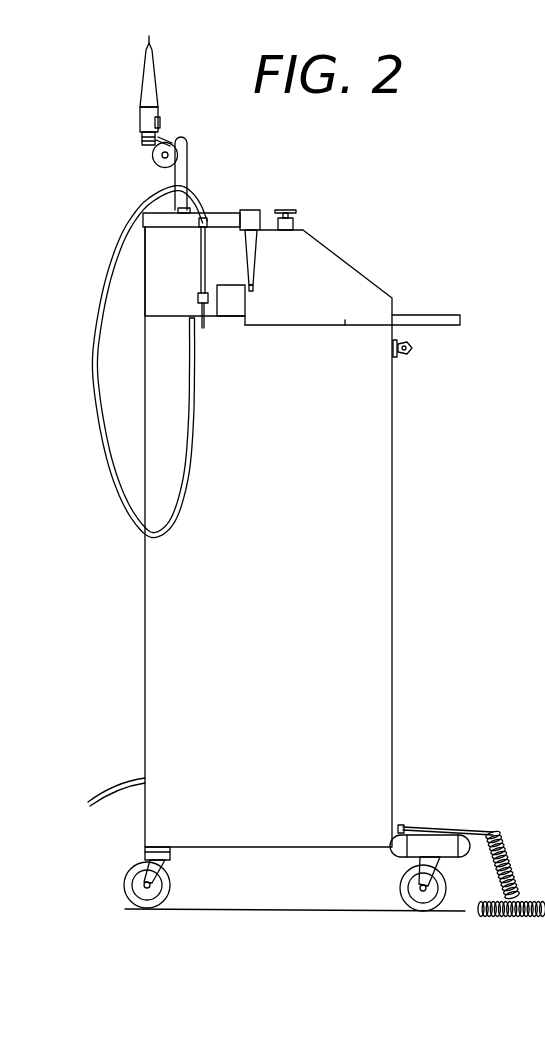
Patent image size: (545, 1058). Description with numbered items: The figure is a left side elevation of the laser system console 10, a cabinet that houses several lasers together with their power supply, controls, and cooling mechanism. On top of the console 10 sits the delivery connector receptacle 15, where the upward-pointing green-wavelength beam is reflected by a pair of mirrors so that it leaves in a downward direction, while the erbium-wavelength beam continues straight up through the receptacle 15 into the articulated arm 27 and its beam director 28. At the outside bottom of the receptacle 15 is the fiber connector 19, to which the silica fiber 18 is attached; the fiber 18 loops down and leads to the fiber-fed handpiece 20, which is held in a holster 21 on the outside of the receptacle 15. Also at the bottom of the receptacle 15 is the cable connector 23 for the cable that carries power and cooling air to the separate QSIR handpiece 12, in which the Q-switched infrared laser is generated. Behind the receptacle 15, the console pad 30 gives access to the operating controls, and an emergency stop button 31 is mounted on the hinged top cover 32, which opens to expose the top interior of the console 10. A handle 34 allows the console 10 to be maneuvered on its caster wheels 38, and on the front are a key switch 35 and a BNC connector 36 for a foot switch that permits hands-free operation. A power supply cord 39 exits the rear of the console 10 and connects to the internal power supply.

The console 10 is at (452, 492).
The QSIR handpiece 12 is at (238, 211).
The delivery connector receptacle 15 is at (148, 262).
The silica fiber 18 is at (98, 390).
The 532 nm connector 19 is at (190, 318).
The 532 nm handpiece 20 is at (196, 243).
The holster 21 is at (200, 297).
The cable connector 23 is at (233, 318).
The articulated arm 27 is at (187, 168).
The beam director 28 is at (156, 86).
The console pad 30 is at (352, 262).
The emergency stop button 31 is at (287, 210).
The top cover 32 is at (345, 320).
The handle 34 is at (448, 314).
The key switch 35 is at (413, 349).
The BNC connector 36 is at (405, 826).
The caster wheels 38 is at (400, 893).
The power supply cord 39 is at (118, 777).